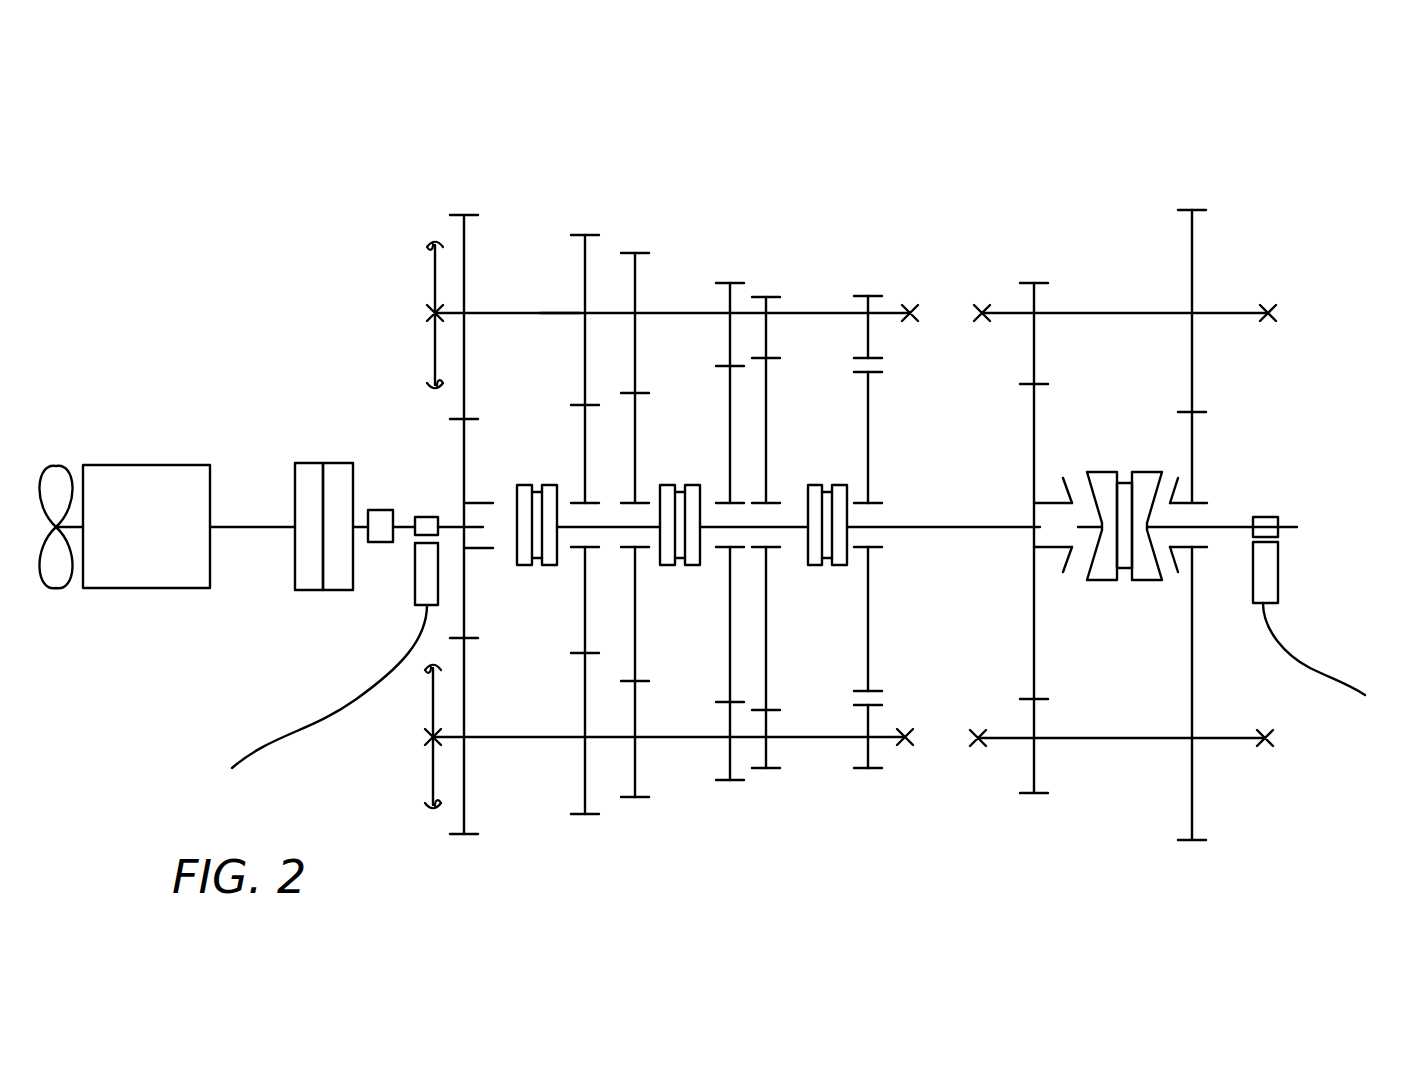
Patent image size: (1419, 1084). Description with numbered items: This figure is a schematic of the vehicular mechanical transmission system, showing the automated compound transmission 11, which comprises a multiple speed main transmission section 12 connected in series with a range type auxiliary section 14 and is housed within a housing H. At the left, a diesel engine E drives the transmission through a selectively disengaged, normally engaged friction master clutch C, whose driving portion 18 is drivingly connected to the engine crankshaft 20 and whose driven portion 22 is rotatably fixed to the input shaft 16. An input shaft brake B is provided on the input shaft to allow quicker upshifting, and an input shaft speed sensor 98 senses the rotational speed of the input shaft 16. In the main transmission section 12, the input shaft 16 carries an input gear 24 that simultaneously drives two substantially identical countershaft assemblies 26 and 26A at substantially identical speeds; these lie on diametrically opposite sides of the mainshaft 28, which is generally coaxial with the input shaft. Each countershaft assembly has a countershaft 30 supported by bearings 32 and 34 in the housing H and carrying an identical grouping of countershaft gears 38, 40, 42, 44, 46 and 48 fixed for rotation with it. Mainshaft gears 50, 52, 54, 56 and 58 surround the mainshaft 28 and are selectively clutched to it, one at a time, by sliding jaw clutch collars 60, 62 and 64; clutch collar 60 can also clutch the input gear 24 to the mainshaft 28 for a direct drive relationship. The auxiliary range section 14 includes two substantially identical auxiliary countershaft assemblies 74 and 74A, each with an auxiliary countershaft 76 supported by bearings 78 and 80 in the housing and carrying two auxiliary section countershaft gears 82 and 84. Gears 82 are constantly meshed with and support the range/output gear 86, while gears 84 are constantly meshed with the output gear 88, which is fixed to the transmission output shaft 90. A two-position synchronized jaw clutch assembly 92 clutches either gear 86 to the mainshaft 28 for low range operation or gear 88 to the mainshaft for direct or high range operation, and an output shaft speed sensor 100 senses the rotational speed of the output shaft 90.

The engine E is at (124, 526).
The engine crankshaft 20 is at (265, 520).
The master clutch C is at (299, 530).
The driving portion 18 is at (312, 590).
The driven portion 22 is at (341, 590).
The input shaft brake B is at (380, 505).
The input shaft 16 is at (408, 522).
The input shaft speed sensor 98 is at (415, 572).
The housing H is at (435, 280).
The bearing 32 is at (431, 741).
The transmission 11 is at (690, 509).
The main transmission section 12 is at (620, 534).
The countershaft assembly 26 is at (672, 287).
The countershaft assembly 26A is at (696, 818).
The countershaft 30 is at (560, 316).
The bearing 34 is at (905, 740).
The input gear 24 is at (466, 438).
The countershaft gear 38 is at (463, 790).
The countershaft gear 40 is at (583, 773).
The countershaft gear 42 is at (633, 770).
The countershaft gear 44 is at (728, 757).
The countershaft gear 46 is at (765, 752).
The countershaft gear 48 is at (866, 755).
The mainshaft gear 50 is at (562, 650).
The mainshaft gear 52 is at (636, 630).
The mainshaft gear 54 is at (728, 645).
The mainshaft gear 56 is at (767, 620).
The mainshaft gear 58 is at (866, 635).
The sliding jaw clutch collar 60 is at (517, 535).
The sliding jaw clutch collar 62 is at (660, 495).
The sliding jaw clutch collar 64 is at (808, 497).
The mainshaft 28 is at (970, 528).
The auxiliary section 14 is at (1162, 476).
The auxiliary countershaft assembly 74 is at (1134, 324).
The auxiliary countershaft assembly 74A is at (1143, 744).
The auxiliary countershaft 76 is at (1157, 316).
The bearing 78 is at (983, 320).
The bearing 80 is at (1268, 310).
The auxiliary section countershaft gear 82 is at (1040, 300).
The auxiliary section countershaft gear 84 is at (1193, 258).
The range/output gear 86 is at (1032, 458).
The output gear 88 is at (1190, 437).
The output shaft 90 is at (1228, 520).
The synchronized jaw clutch assembly 92 is at (1102, 585).
The output shaft speed sensor 100 is at (1278, 572).